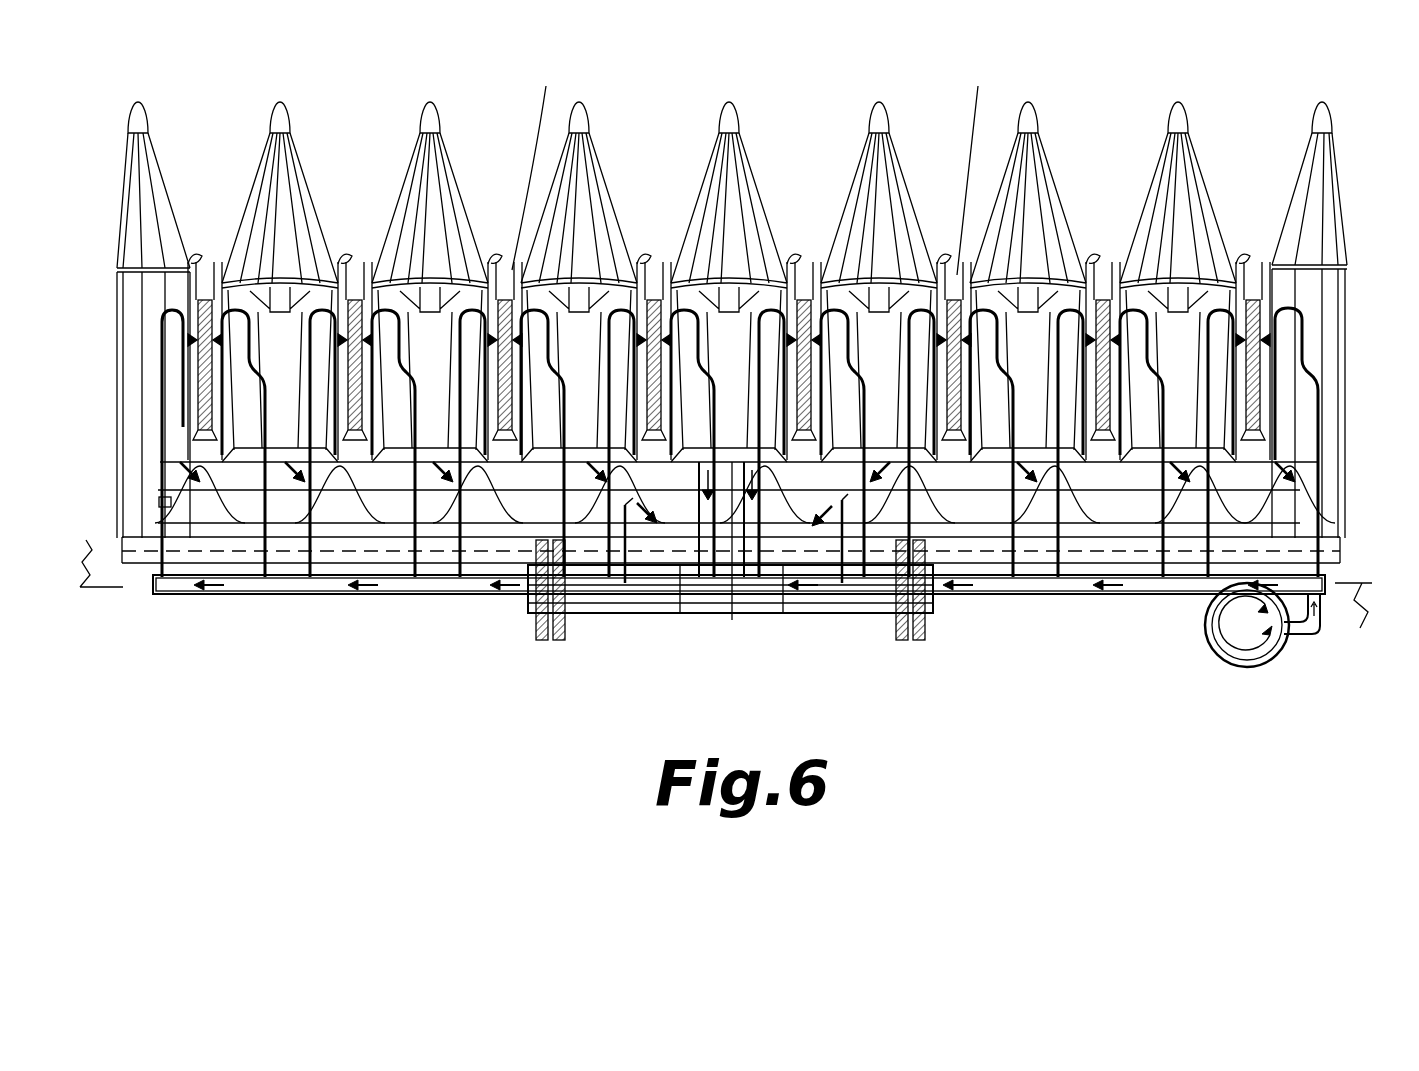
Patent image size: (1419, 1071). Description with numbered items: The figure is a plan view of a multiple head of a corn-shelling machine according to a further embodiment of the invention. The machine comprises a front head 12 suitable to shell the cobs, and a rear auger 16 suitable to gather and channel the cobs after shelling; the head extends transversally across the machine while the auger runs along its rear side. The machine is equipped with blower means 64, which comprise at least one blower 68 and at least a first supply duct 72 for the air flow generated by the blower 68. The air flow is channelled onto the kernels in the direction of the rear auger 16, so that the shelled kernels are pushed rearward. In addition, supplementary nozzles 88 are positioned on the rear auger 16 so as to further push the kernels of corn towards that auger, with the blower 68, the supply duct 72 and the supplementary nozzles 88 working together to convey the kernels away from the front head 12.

The front head 12 is at (1351, 314).
The rear auger 16 is at (152, 597).
The blower means 64 is at (736, 649).
The blower 68 is at (1213, 660).
The first supply duct 72 is at (272, 597).
The supplementary nozzles 88 is at (177, 460).